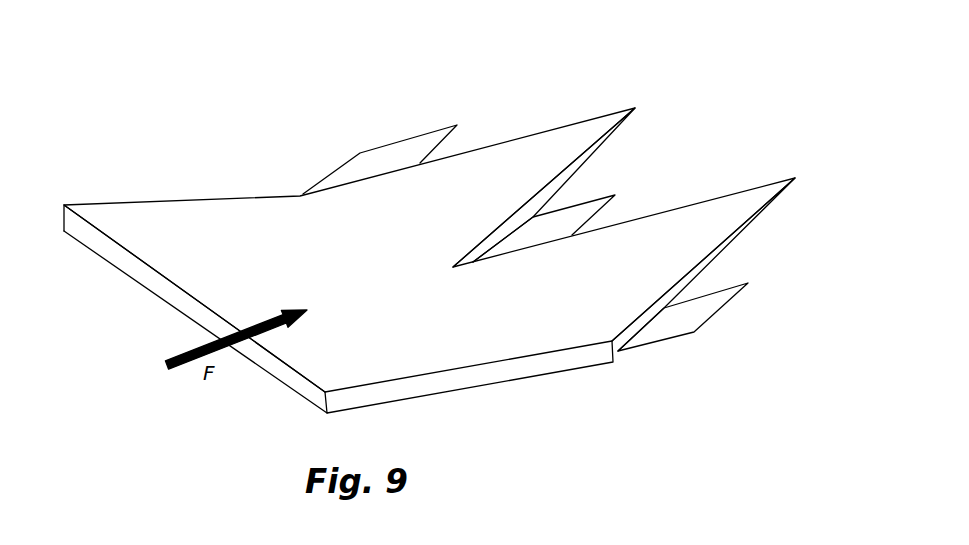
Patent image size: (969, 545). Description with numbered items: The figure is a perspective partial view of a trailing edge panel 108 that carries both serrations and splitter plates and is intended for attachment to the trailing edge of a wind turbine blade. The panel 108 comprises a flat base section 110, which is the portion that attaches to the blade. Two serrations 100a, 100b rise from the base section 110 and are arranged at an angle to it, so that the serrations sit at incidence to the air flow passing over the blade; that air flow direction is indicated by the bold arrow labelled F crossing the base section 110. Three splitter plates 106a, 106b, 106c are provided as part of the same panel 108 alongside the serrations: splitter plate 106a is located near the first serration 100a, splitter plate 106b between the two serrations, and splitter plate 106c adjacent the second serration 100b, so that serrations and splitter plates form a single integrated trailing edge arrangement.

The trailing edge panel 108 is at (268, 160).
The base section 110 is at (190, 263).
The serration 100a is at (585, 118).
The serration 100b is at (784, 179).
The splitter plate 106a is at (413, 139).
The splitter plate 106b is at (592, 203).
The splitter plate 106c is at (718, 301).